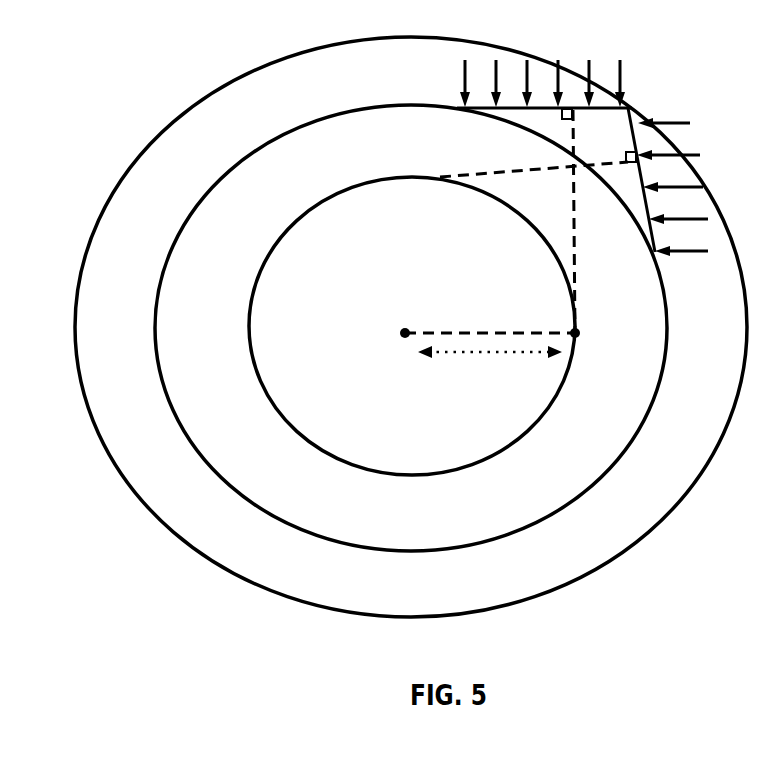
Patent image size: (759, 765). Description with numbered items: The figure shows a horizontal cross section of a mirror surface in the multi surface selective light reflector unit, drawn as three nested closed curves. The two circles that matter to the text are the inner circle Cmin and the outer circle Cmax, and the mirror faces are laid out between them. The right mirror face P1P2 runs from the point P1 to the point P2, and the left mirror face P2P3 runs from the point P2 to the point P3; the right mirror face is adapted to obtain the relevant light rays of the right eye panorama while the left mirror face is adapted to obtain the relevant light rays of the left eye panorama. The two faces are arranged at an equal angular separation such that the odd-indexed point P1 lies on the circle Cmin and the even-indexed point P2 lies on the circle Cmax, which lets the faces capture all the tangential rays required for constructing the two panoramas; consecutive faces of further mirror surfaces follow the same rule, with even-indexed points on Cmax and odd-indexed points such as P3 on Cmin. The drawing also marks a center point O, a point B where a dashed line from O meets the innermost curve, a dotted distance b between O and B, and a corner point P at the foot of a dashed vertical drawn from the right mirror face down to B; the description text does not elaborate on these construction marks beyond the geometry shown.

The circle C_max Cmax is at (411, 327).
The circle C_min Cmin is at (411, 328).
The center point O is at (386, 346).
The point B on inner circle B is at (507, 338).
The radius b is at (490, 354).
The point P is at (578, 221).
The point P1 is at (530, 118).
The point P2 is at (672, 158).
The point P3 is at (636, 201).